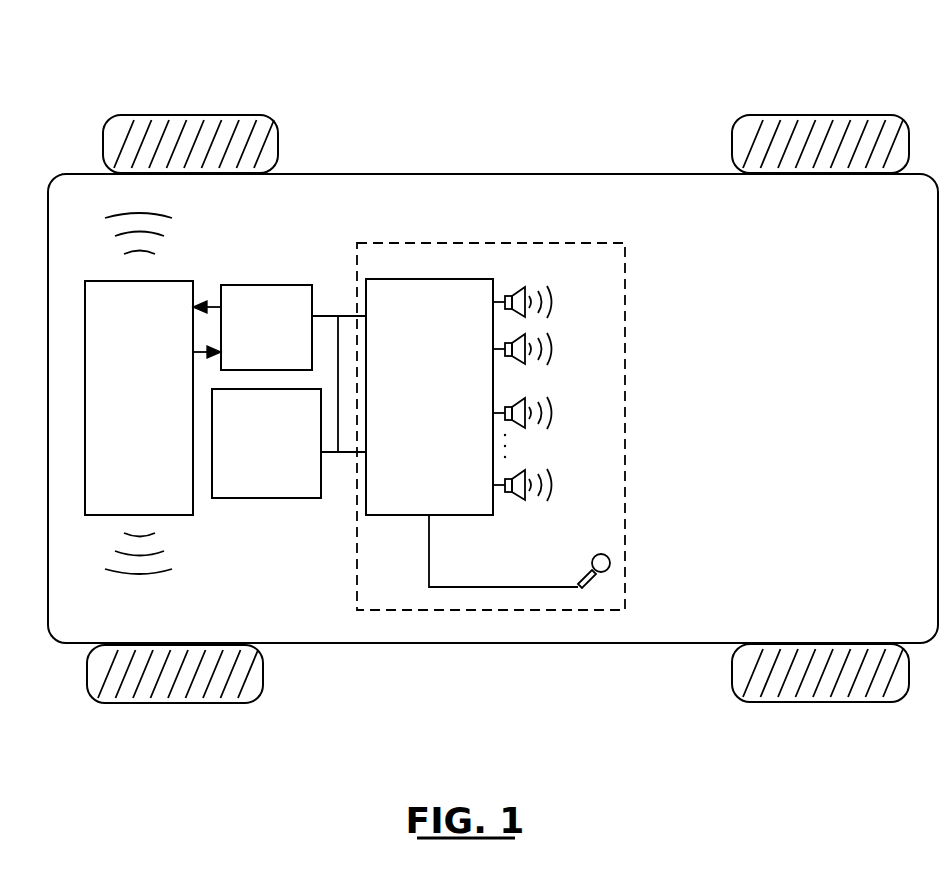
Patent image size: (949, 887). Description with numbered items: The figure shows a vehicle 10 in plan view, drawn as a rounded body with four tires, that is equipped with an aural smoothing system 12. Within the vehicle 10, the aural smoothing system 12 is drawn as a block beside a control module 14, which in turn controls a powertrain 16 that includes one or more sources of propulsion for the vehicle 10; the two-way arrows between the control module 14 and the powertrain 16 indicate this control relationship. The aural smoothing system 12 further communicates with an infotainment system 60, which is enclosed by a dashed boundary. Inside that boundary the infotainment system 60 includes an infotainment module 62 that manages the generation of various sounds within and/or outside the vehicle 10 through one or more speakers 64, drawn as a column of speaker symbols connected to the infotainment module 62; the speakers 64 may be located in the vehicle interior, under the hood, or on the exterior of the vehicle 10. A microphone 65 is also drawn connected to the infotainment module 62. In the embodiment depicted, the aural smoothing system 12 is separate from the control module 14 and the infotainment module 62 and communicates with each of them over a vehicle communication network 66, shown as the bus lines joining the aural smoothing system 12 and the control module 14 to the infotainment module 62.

The vehicle 10 is at (498, 88).
The aural smoothing system 12 is at (266, 443).
The control module 14 is at (252, 327).
The powertrain 16 is at (139, 398).
The infotainment system 60 is at (492, 243).
The infotainment module 62 is at (472, 433).
The speakers 64 is at (518, 291).
The microphone 65 is at (597, 554).
The vehicle communication network 66 is at (327, 314).